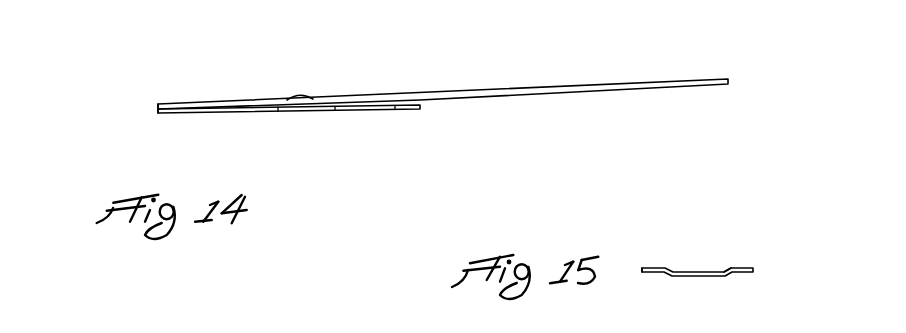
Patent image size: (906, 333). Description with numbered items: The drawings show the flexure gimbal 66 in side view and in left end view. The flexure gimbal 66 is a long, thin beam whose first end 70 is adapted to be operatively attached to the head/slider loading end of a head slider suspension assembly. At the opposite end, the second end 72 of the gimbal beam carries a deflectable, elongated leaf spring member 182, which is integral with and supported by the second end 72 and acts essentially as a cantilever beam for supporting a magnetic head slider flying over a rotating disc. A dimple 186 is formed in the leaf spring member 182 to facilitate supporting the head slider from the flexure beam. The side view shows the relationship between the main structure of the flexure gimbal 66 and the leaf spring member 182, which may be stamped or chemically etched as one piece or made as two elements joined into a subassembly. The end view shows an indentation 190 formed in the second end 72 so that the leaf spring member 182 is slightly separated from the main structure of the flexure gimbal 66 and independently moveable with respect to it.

In FIG. 14, the flexure gimbal 66 is at (472, 100).
In FIG. 14, the first end 70 is at (730, 80).
In FIG. 14, the second end 72 is at (165, 112).
In FIG. 15, the second end 72 is at (650, 273).
In FIG. 14, the deflectable, elongated leaf spring member 182 is at (233, 113).
In FIG. 15, the deflectable, elongated leaf spring member 182 is at (697, 276).
In FIG. 14, the dimple 186 is at (302, 97).
In FIG. 15, the indentation 190 is at (728, 266).